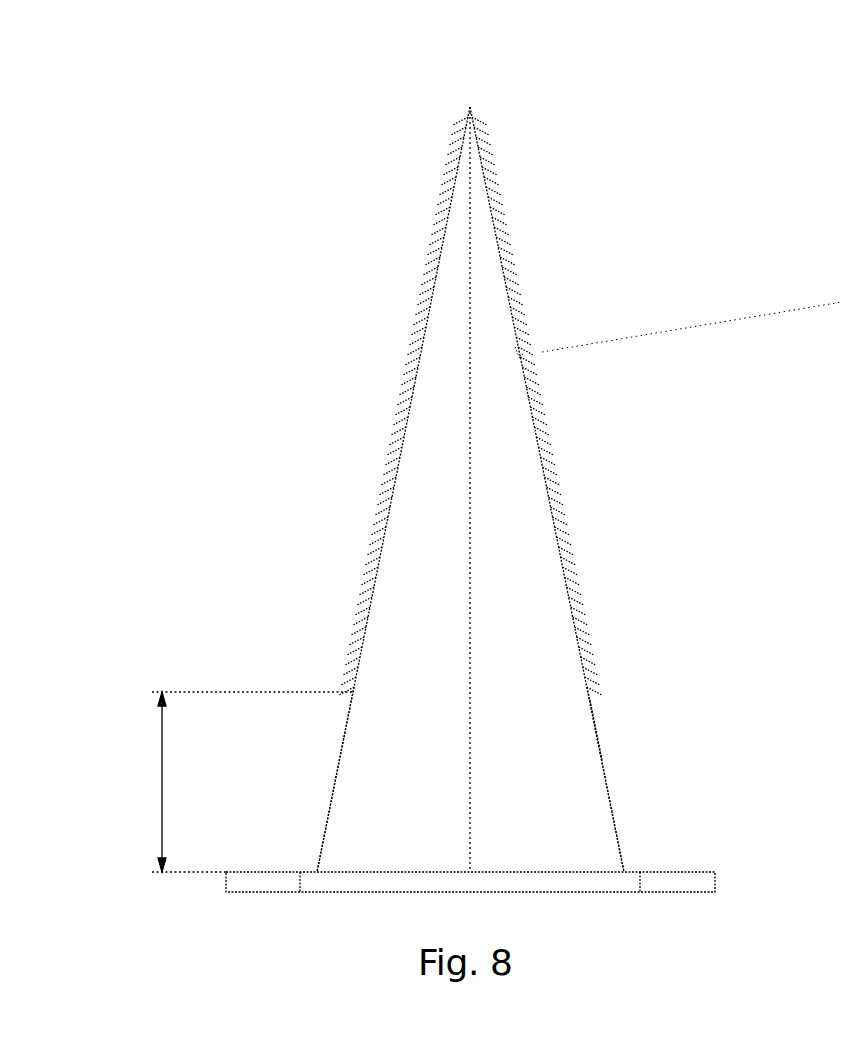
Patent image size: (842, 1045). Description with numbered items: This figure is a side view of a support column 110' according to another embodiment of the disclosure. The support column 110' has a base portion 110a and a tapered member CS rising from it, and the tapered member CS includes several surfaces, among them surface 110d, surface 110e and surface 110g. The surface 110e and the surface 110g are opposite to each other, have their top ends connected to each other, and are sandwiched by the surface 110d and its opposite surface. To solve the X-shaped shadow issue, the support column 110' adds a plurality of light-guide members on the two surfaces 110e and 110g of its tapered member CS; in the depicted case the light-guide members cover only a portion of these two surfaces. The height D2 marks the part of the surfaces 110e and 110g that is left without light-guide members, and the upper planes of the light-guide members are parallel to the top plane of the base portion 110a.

The support column 110' is at (573, 484).
The base portion 110a is at (716, 876).
The surface 110d is at (530, 583).
The surface 110e is at (337, 770).
The surface 110g is at (605, 770).
The tapered member CS is at (617, 723).
The height D2 is at (233, 782).